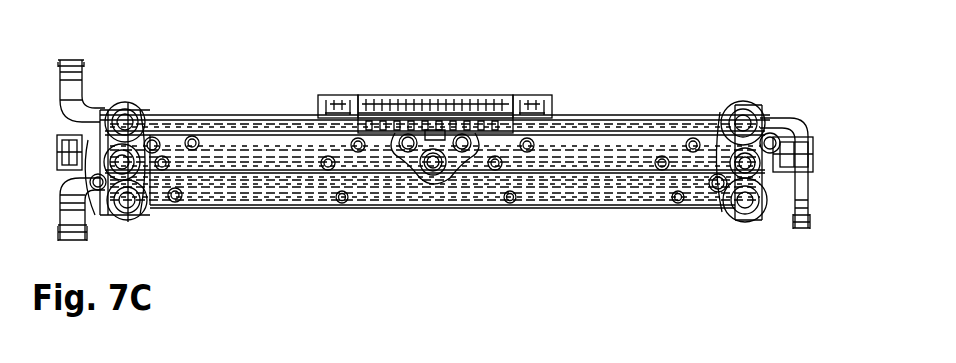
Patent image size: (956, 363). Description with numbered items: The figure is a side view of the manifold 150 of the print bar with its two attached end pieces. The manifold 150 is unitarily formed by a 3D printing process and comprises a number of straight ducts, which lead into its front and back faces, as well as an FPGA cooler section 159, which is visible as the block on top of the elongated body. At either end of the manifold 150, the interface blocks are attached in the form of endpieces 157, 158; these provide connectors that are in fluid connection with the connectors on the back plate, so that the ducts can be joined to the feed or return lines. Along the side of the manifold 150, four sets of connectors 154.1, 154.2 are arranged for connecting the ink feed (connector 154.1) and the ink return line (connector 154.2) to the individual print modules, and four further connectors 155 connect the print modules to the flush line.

The manifold 150 is at (640, 86).
The connector 154.1 is at (165, 156).
The connector 154.2 is at (195, 136).
The connector 155 is at (178, 202).
The endpiece 157 is at (117, 84).
The endpiece 158 is at (768, 84).
The FPGA cooler section 159 is at (474, 105).